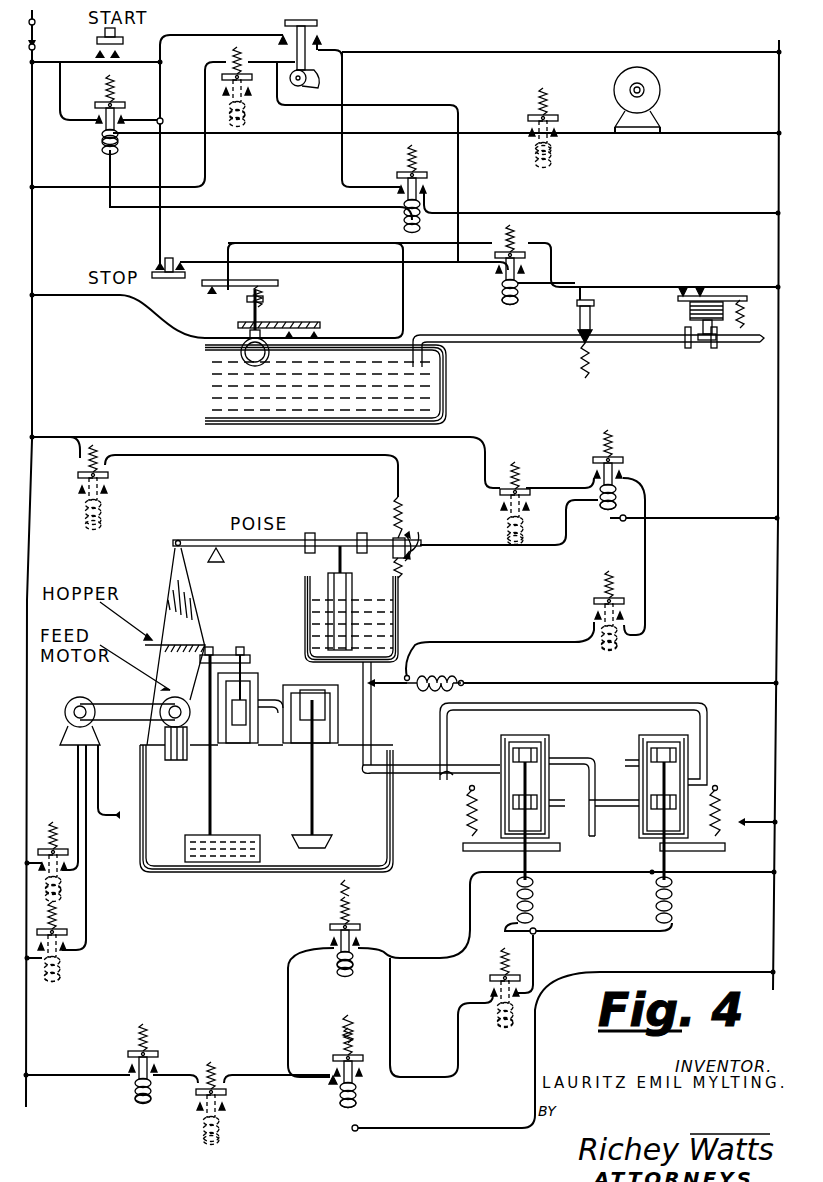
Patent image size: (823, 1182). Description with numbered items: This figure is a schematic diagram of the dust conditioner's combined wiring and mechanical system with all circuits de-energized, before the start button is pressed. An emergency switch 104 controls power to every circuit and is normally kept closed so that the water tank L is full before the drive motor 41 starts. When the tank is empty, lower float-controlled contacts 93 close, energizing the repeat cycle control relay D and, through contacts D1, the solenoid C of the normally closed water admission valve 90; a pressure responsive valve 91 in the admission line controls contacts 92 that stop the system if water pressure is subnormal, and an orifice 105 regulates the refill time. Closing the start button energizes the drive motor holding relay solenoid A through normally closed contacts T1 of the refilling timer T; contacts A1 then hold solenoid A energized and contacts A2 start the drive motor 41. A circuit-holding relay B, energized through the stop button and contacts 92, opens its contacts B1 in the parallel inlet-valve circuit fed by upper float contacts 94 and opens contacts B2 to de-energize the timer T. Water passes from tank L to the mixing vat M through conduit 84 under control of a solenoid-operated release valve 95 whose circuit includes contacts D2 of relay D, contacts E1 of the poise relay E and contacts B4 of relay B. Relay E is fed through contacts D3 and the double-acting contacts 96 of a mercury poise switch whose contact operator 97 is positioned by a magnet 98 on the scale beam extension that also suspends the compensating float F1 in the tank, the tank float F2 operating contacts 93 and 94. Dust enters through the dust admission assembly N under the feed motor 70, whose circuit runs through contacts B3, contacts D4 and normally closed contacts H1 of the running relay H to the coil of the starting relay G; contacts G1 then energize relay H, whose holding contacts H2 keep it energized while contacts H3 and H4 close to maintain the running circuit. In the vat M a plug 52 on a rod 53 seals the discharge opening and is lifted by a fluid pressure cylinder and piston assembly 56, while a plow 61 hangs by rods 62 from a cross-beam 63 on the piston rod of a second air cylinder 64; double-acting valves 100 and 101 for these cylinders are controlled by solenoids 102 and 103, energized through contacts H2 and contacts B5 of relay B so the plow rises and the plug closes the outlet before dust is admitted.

The emergency switch 104 is at (34, 40).
The normally closed contacts T1 is at (312, 41).
The water tank refilling timer T is at (322, 92).
The drive motor 41 is at (614, 90).
The normally open contacts A1 is at (124, 115).
The drive motor holding relay solenoid A is at (100, 150).
The normally open contacts A2 is at (527, 128).
The normally closed contacts B2 is at (247, 84).
The circuit-holding relay solenoid B is at (246, 122).
The normally closed contacts B1 is at (520, 263).
The contacts D1 is at (399, 185).
The repeat cycle control relay D is at (400, 227).
The water-pressure controlled contacts 92 is at (690, 290).
The pressure responsive valve 91 is at (688, 302).
The solenoid C is at (594, 322).
The water admission valve 90 is at (592, 345).
The upper float-controlled contacts 94 is at (212, 292).
The lower float-controlled contacts 93 is at (314, 336).
The float F2 is at (240, 356).
The orifice 105 is at (498, 345).
The cross-beam 63 is at (551, 345).
The water tank L is at (446, 418).
The normally closed contacts D3 is at (108, 485).
The normally closed contact D2 is at (524, 498).
The normally open contact E1 is at (624, 470).
The poise switch relay E is at (604, 518).
The magnetic poise switch 97 is at (398, 496).
The magnet 98 is at (362, 532).
The double-acting contacts 96 is at (415, 542).
The compensating float F1 is at (322, 588).
The second air cylinder 64 is at (256, 680).
The fluid pressure cylinder and piston assembly 56 is at (288, 690).
The normally open contact B4 is at (590, 611).
The water release valve 95 is at (450, 678).
The feed motor 70 is at (80, 696).
The dust admission assembly N is at (158, 663).
The conduit 84 is at (372, 720).
The rods 62 is at (44, 826).
The plow 61 is at (250, 835).
The rod 53 is at (310, 810).
The plug member 52 is at (326, 845).
The double-acting electrically-controlled valve 100 is at (510, 736).
The double-acting electrically-controlled valve 101 is at (650, 736).
The motor-starting relay G is at (66, 890).
The contacts H4 is at (66, 935).
The motor-running circuit relay H is at (68, 982).
The solenoid 102 is at (560, 905).
The solenoid 103 is at (677, 918).
The normally open contacts G1 is at (359, 928).
The normally closed contacts H1 is at (356, 1040).
The contacts H3 is at (372, 1058).
The normally open contacts H2 is at (330, 1082).
The contacts B5 is at (491, 988).
The normally open contacts B3 is at (129, 1064).
The normally closed contacts D4 is at (223, 1097).
The mixing vat M is at (268, 876).